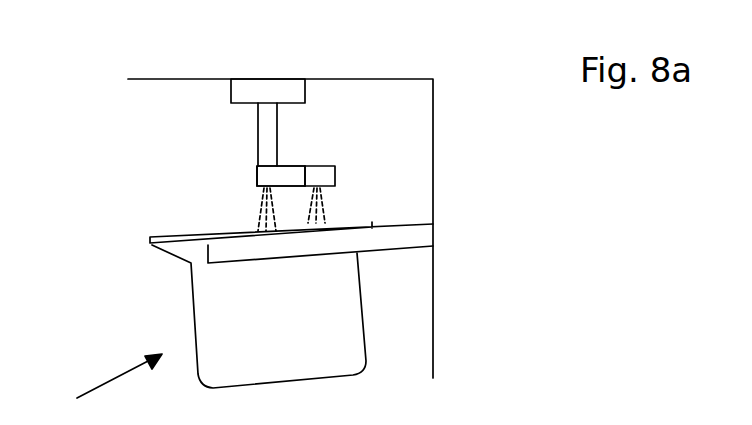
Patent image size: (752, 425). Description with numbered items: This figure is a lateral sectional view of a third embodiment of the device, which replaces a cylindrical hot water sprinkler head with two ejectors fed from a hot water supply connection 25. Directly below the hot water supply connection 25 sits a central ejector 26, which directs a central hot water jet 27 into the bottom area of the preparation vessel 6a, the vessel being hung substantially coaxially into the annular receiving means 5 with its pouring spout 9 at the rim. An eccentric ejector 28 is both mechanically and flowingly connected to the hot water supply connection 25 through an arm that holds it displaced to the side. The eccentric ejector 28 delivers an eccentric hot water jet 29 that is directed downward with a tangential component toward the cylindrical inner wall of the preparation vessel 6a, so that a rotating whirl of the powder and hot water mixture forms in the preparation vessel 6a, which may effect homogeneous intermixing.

The hot water supply connection 25 is at (265, 148).
The eccentric ejector 28 is at (320, 177).
The central ejector 26 is at (258, 186).
The eccentric hot water jet 29 is at (322, 218).
The central hot water jet 27 is at (263, 218).
The annular receiving means 5 is at (355, 240).
The pouring spout 9 is at (180, 247).
The preparation vessel 6a is at (101, 388).